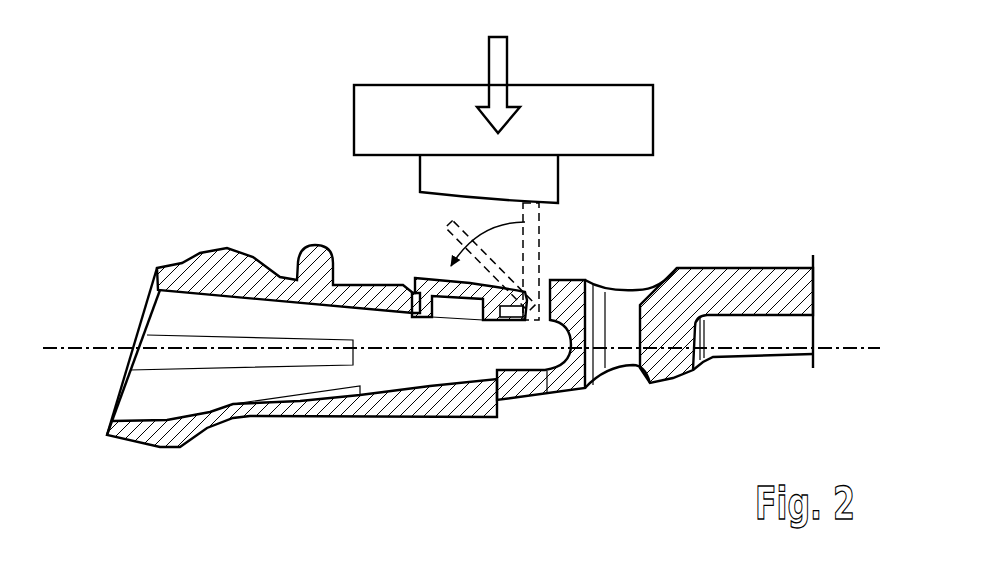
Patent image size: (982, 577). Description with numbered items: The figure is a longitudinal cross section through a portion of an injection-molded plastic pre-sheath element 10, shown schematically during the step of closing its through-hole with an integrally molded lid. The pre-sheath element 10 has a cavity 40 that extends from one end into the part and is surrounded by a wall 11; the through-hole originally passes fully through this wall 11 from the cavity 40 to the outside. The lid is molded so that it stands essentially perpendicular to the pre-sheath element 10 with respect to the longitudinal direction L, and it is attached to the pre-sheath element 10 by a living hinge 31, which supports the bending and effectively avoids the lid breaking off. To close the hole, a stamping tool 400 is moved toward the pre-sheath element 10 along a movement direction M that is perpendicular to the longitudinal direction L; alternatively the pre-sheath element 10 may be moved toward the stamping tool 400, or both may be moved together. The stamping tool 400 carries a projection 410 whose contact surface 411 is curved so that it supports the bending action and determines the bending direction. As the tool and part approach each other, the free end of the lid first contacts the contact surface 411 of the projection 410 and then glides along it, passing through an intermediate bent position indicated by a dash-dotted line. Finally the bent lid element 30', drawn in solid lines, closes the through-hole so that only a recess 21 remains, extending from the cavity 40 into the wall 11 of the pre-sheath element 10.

The pre-sheath element 10 is at (792, 246).
The wall 11 is at (363, 282).
The recess 21 is at (462, 300).
The bent lid element 30' is at (457, 379).
The living hinge 31 is at (516, 302).
The cavity 40 is at (210, 358).
The stamping tool 400 is at (637, 118).
The projection 410 is at (547, 180).
The contact surface 411 is at (457, 191).
The movement direction M is at (500, 48).
The longitudinal direction L is at (77, 345).